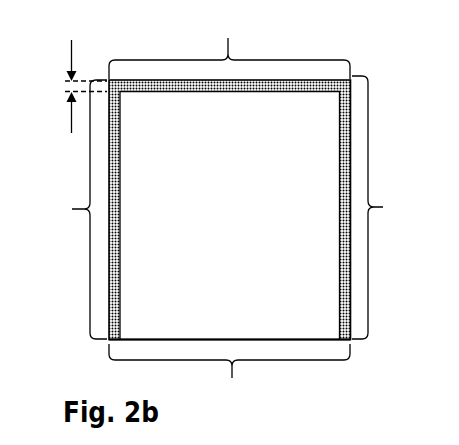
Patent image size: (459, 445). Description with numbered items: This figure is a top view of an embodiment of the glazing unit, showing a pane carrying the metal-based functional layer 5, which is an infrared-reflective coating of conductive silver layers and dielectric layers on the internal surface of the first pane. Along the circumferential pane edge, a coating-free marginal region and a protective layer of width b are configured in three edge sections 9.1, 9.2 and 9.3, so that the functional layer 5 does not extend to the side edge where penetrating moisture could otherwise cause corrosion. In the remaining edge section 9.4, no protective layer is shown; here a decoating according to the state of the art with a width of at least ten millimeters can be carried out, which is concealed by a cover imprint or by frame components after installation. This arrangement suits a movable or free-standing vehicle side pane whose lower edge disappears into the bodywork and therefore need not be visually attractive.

The metal-based functional layer 5 is at (302, 147).
The edge section 9.1 is at (68, 209).
The edge section 9.2 is at (229, 43).
The edge section 9.3 is at (384, 207).
The edge section 9.4 is at (229, 377).
The width of the protective layer b is at (84, 102).